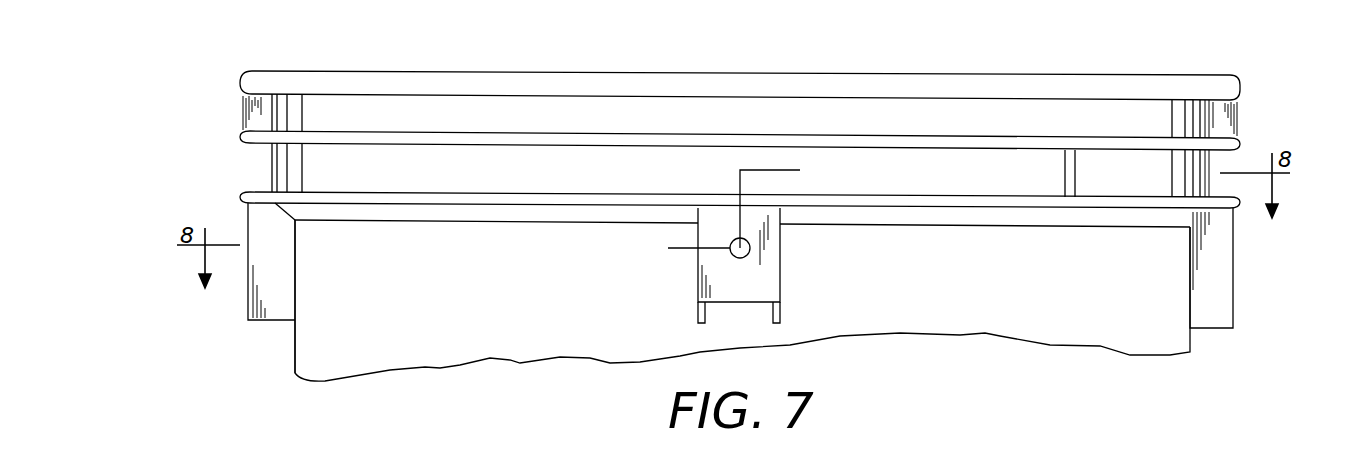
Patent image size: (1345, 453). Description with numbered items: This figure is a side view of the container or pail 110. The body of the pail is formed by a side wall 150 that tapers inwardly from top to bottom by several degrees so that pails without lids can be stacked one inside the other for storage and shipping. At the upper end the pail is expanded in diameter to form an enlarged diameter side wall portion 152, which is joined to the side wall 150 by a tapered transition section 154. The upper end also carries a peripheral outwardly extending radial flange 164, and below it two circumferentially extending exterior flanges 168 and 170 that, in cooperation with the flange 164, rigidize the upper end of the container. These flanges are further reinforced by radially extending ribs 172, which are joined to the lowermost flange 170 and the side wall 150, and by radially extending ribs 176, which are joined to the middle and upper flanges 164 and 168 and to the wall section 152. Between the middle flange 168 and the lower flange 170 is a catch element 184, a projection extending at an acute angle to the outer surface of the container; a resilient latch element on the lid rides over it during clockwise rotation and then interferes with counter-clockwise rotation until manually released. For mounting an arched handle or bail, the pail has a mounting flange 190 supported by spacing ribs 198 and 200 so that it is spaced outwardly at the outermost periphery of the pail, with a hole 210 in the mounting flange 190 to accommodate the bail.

The container (pail) 110 is at (468, 58).
The side wall 150 is at (295, 333).
The enlarged diameter side wall portion 152 is at (272, 153).
The tapered transition section 154 is at (1195, 220).
The radial flange 164 is at (258, 70).
The middle exterior flange 168 is at (250, 128).
The lowermost exterior flange 170 is at (246, 191).
The radially-extending ribs 172 is at (267, 302).
The radially-extending ribs 176 is at (248, 95).
The catch element 184 is at (1075, 172).
The mounting flange 190 is at (739, 255).
The spacing rib 198 is at (698, 308).
The spacing rib 200 is at (782, 312).
The hole 210 is at (750, 250).